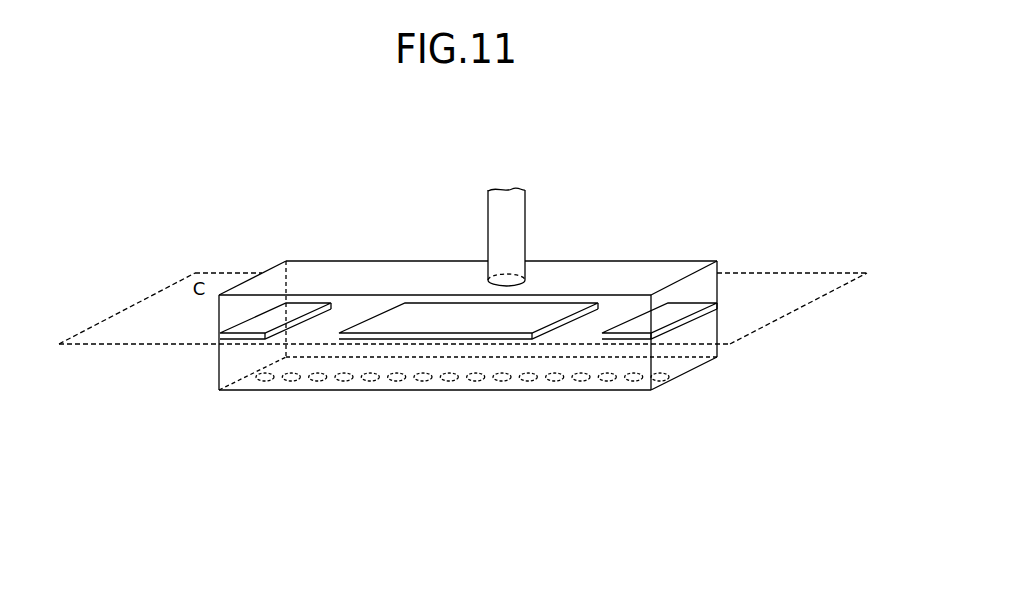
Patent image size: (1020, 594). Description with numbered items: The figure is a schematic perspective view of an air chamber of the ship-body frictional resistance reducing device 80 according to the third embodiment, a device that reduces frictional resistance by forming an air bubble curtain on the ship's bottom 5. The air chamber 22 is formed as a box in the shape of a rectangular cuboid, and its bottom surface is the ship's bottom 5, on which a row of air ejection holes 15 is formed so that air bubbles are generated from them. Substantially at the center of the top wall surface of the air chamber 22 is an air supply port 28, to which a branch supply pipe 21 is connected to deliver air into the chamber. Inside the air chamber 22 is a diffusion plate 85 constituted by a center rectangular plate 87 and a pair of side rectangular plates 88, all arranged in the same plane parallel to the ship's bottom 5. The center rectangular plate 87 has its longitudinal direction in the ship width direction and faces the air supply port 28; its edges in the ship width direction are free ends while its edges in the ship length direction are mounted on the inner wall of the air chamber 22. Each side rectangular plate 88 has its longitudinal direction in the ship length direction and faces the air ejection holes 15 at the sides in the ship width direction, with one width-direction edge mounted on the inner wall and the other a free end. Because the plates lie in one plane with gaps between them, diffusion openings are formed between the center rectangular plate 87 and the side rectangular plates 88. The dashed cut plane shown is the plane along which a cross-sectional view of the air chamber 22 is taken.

The ship-body frictional resistance reducing device 80 is at (641, 148).
The branch supply pipe 21 is at (526, 197).
The air supply port 28 is at (525, 285).
The air chamber 22 is at (709, 248).
The ship's bottom 5 is at (527, 405).
The air ejection holes 15 is at (579, 384).
The diffusion plate 85 is at (367, 469).
The side rectangular plates 88 is at (253, 330).
The center rectangular plate 87 is at (402, 323).